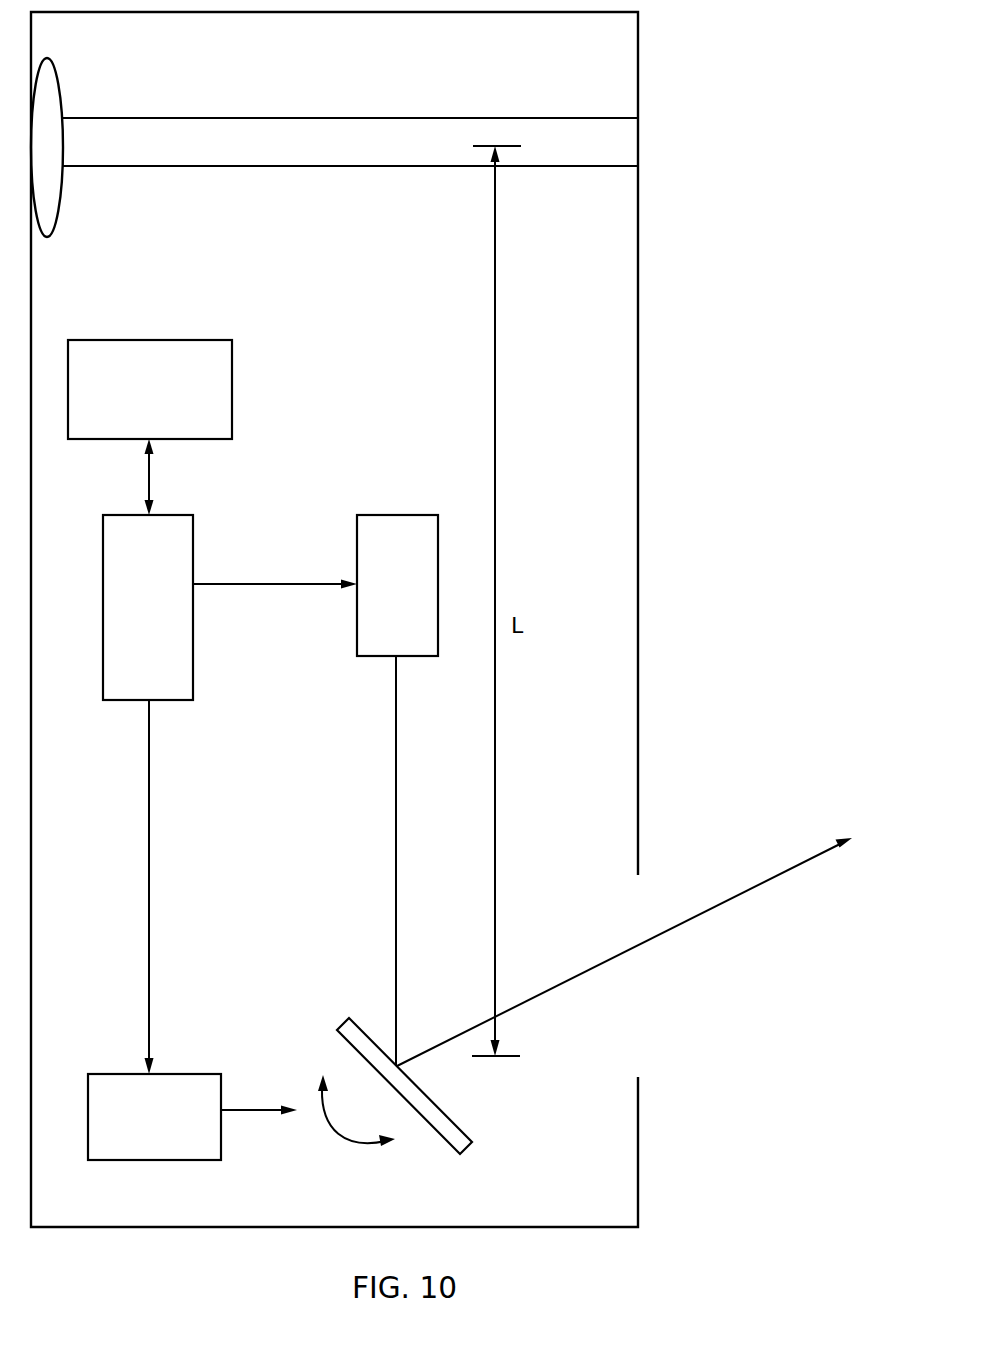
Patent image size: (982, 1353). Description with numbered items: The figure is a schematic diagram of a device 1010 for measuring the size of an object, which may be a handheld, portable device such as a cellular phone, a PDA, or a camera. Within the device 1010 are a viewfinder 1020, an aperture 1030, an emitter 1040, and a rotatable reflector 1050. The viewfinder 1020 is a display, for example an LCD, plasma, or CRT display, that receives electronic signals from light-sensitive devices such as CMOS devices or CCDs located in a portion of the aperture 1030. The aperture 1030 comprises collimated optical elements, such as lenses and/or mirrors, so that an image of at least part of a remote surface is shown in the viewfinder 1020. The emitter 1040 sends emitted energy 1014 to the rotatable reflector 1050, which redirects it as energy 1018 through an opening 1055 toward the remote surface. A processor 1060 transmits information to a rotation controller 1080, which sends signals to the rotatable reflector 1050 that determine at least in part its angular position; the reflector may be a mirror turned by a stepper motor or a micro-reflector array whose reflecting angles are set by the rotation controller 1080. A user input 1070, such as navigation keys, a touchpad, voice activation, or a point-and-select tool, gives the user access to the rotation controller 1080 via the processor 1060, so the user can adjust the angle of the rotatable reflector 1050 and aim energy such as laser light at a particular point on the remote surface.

The device 1010 is at (141, 1228).
The emitted energy 1014 is at (398, 887).
The energy 1018 is at (712, 911).
The viewfinder 1020 is at (49, 238).
The aperture 1030 is at (575, 117).
The emitter 1040 is at (400, 514).
The rotatable reflector 1050 is at (448, 1110).
The opening 1055 is at (666, 880).
The processor 1060 is at (178, 514).
The user input 1070 is at (193, 339).
The rotation controller 1080 is at (183, 1073).